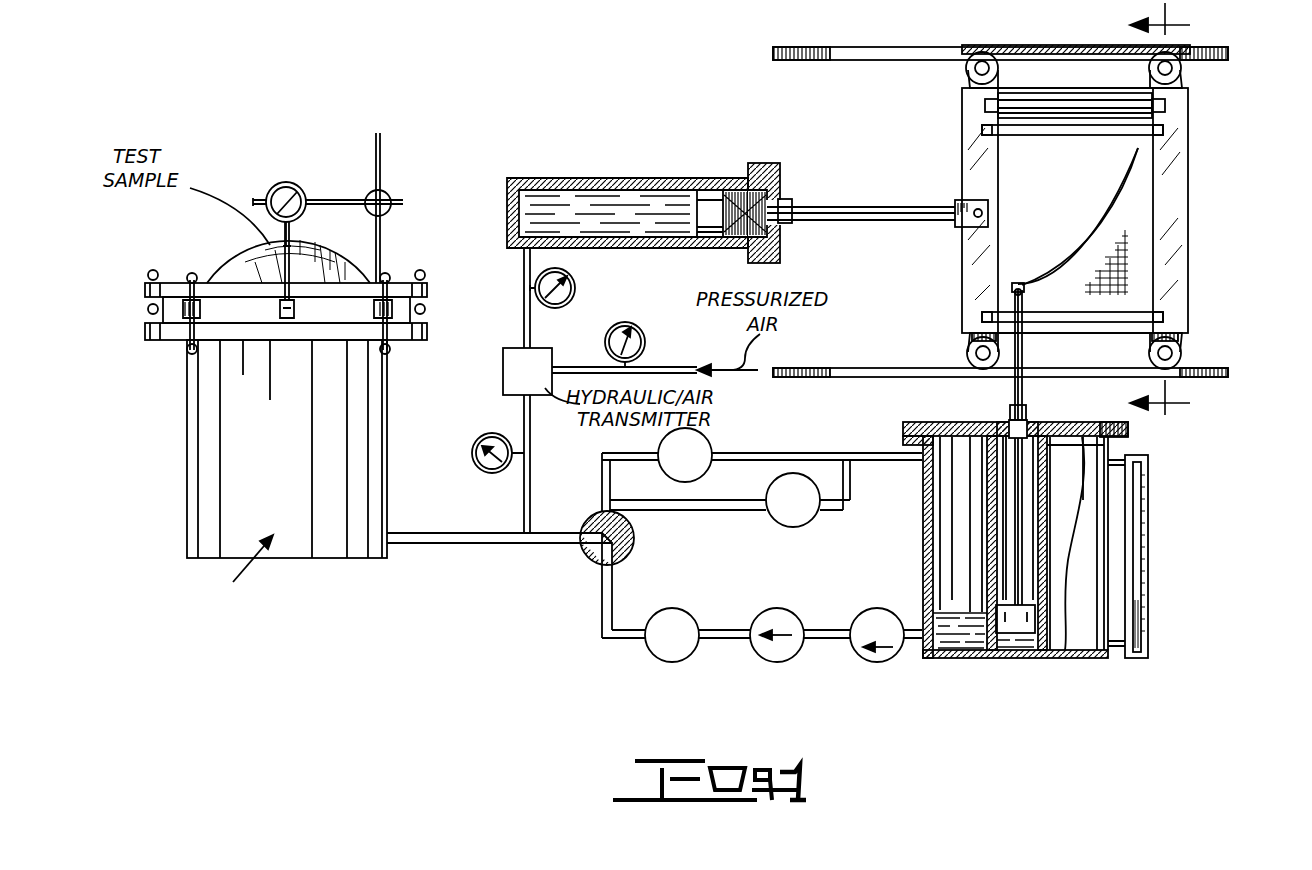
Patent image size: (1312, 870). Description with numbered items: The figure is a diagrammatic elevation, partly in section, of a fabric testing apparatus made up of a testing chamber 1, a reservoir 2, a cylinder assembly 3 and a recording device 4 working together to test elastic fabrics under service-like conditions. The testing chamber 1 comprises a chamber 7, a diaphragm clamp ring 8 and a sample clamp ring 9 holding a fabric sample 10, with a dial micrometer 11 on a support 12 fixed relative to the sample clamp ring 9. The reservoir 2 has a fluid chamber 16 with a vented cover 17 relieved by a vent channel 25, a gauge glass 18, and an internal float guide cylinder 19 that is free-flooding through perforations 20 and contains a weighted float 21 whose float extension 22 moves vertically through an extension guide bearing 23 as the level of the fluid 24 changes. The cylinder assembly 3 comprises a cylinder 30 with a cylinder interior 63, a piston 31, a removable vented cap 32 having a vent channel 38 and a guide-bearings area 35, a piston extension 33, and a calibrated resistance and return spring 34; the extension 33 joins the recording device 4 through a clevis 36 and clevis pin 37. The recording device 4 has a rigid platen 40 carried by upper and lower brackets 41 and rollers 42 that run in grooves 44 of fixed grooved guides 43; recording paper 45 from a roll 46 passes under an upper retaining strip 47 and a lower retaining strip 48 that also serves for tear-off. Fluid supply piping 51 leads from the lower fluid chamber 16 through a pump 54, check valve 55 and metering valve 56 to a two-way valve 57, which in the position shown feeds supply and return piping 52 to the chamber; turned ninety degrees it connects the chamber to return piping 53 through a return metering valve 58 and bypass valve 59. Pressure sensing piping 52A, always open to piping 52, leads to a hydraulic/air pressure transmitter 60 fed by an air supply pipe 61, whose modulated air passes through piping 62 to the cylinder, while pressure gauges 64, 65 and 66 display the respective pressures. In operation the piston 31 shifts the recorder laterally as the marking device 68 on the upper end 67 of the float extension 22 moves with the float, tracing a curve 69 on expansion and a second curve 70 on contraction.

The testing chamber 1 is at (247, 569).
The reservoir 2 is at (1073, 642).
The cylinder assembly 3 is at (650, 184).
The recording device 4 is at (1178, 160).
The chamber 7 is at (198, 512).
The diaphragm clamp ring 8 is at (175, 342).
The sample clamp ring 9 is at (150, 289).
The fabric sample 10 is at (248, 258).
The dial micrometer 11 is at (292, 183).
The support 12 is at (381, 244).
The fluid chamber 16 is at (922, 481).
The vented cover 17 is at (925, 424).
The gauge glass 18 is at (1148, 520).
The internal float guide cylinder 19 is at (1058, 448).
The perforations 20 is at (990, 432).
The weighted float 21 is at (1035, 648).
The float extension 22 is at (1024, 412).
The extension guide bearing 23 is at (1014, 420).
The fluid 24 is at (960, 615).
The vent channel 25 is at (1000, 425).
The cylinder 30 is at (538, 180).
The piston 31 is at (708, 188).
The removable vented cap 32 is at (768, 163).
The piston extension 33 is at (838, 205).
The calibrated resistance and return spring 34 is at (740, 190).
The guide-bearings area 35 is at (790, 223).
The clevis 36 is at (957, 204).
The clevis pin 37 is at (980, 207).
The vent channel 38 is at (790, 198).
The platen 40 is at (1170, 275).
The brackets 41 is at (975, 82).
The rollers 42 is at (965, 70).
The fixed grooved guides 43 is at (842, 48).
The grooves 44 is at (1022, 57).
The recording paper 45 is at (1142, 228).
The roll 46 is at (1075, 100).
The upper retaining strip 47 is at (1158, 128).
The lower retaining strip 48 is at (1135, 312).
The fluid supply piping 51 is at (612, 645).
The supply and return piping 52 is at (486, 547).
The pressure sensing piping 52A is at (522, 426).
The return piping 53 is at (600, 486).
The pump 54 is at (870, 608).
The check valve 55 is at (775, 608).
The metering valve 56 is at (680, 610).
The two-way valve 57 is at (634, 547).
The return metering valve 58 is at (710, 445).
The bypass valve 59 is at (770, 520).
The hydraulic/air pressure transmitter 60 is at (503, 388).
The supply pipe 61 is at (668, 367).
The piping 62 is at (522, 292).
The cylinder interior 63 is at (515, 200).
The pressure gauge 64 is at (477, 461).
The pressure gauge 65 is at (641, 330).
The pressure gauge 66 is at (576, 282).
The upper end 67 is at (1089, 267).
The marking device 68 is at (1013, 289).
The curve 69 is at (1106, 224).
The second curve 70 is at (1110, 182).